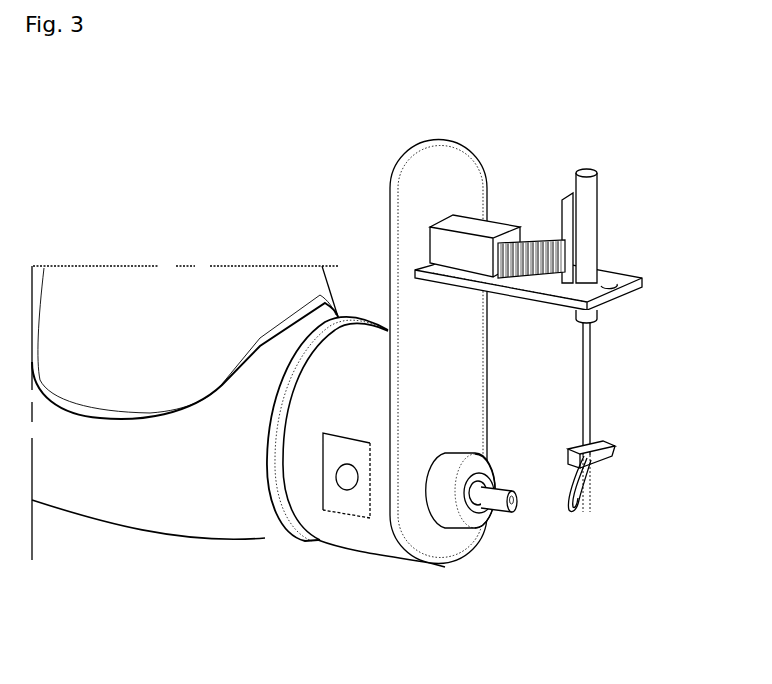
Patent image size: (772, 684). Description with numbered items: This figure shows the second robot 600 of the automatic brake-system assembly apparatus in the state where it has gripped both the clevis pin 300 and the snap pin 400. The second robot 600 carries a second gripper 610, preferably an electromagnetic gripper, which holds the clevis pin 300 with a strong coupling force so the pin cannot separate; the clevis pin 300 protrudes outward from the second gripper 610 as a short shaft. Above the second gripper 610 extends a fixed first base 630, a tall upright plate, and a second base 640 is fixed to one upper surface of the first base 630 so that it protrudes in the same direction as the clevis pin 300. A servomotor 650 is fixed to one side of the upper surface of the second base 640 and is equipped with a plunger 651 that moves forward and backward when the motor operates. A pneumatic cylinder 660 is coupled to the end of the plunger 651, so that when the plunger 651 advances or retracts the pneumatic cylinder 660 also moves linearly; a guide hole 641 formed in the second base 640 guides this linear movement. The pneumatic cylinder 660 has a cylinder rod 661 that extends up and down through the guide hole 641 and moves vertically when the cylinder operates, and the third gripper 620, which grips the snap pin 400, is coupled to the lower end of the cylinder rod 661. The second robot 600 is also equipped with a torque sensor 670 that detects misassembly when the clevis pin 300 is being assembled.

The clevis pin 300 is at (516, 504).
The snap pin 400 is at (588, 490).
The second robot 600 is at (166, 305).
The second gripper 610 is at (440, 510).
The third gripper 620 is at (605, 440).
The first base 630 is at (428, 182).
The second base 640 is at (642, 282).
The guide hole 641 is at (608, 286).
The servomotor 650 is at (465, 217).
The plunger 651 is at (533, 242).
The pneumatic cylinder 660 is at (592, 192).
The cylinder rod 661 is at (590, 368).
The torque sensor 670 is at (347, 480).